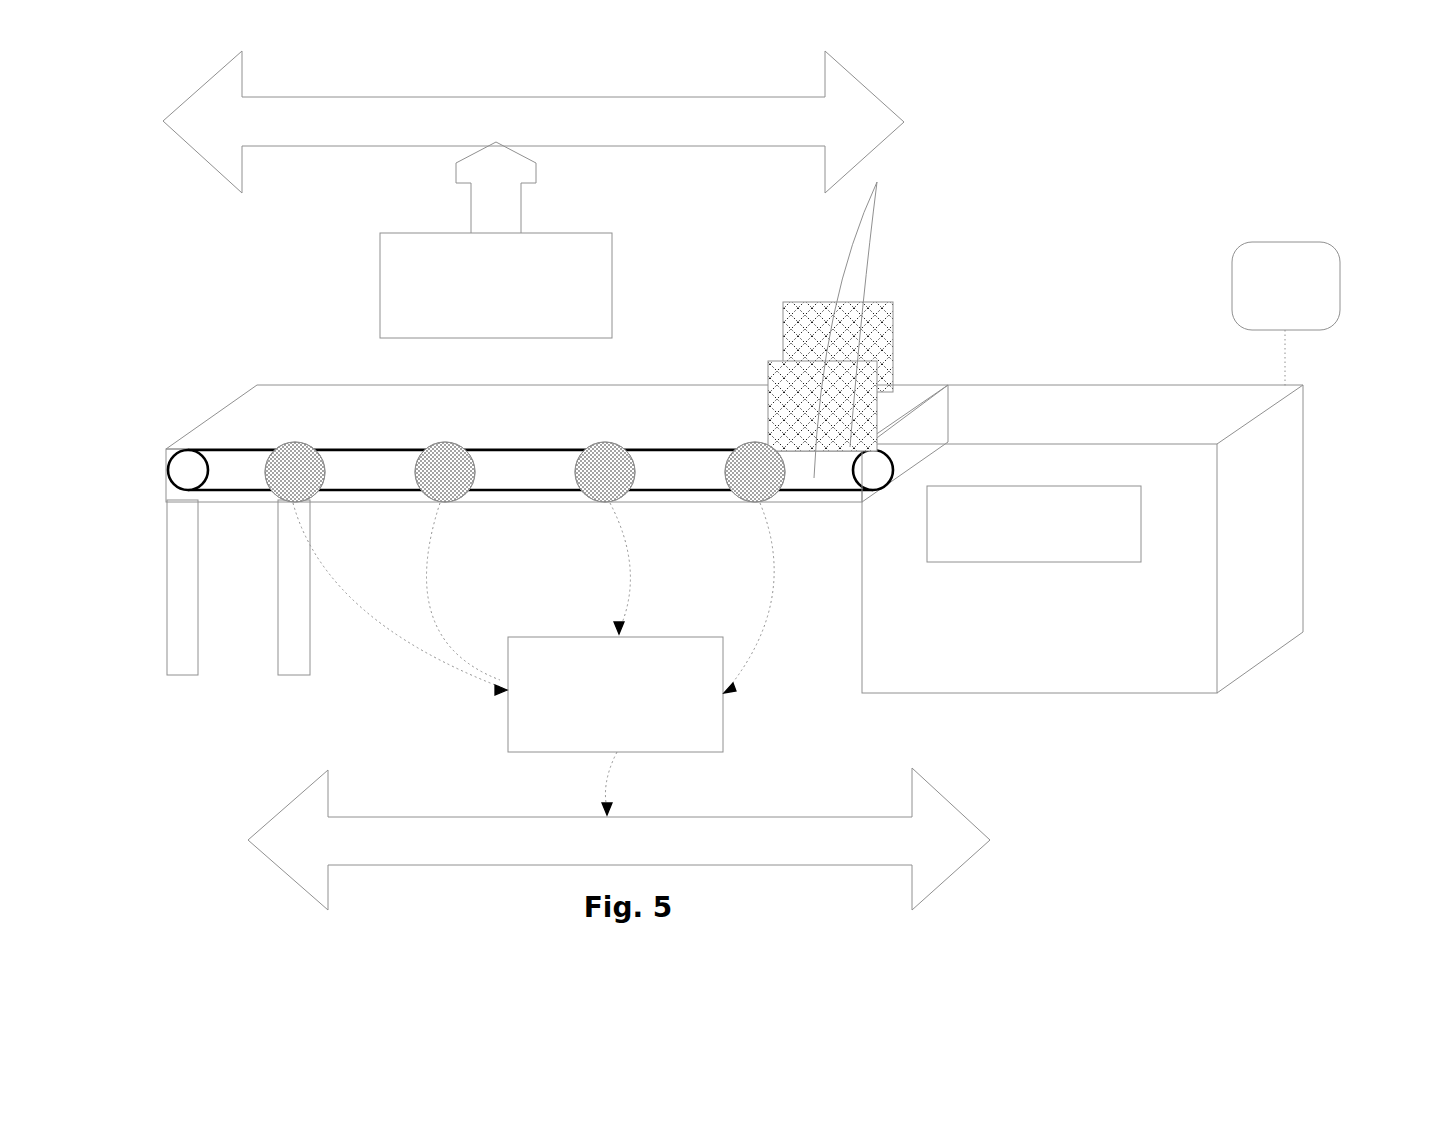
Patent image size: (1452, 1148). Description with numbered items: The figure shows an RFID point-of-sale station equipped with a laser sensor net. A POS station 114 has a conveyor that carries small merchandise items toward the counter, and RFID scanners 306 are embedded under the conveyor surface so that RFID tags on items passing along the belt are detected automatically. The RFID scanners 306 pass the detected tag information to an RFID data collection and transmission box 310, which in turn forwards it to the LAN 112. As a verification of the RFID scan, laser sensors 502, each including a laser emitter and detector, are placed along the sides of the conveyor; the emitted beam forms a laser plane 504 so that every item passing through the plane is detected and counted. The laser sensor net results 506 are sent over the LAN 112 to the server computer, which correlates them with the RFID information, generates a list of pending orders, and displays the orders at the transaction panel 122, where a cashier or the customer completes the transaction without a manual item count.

The LAN 112 is at (576, 480).
The laser sensor net results 506 is at (496, 240).
The laser plane 504 is at (836, 220).
The laser sensors 502 is at (896, 316).
The transaction panel 122 is at (1326, 320).
The POS station 114 is at (1082, 571).
The RFID scanners 306 is at (739, 477).
The RFID data collection and transmission box 310 is at (533, 659).